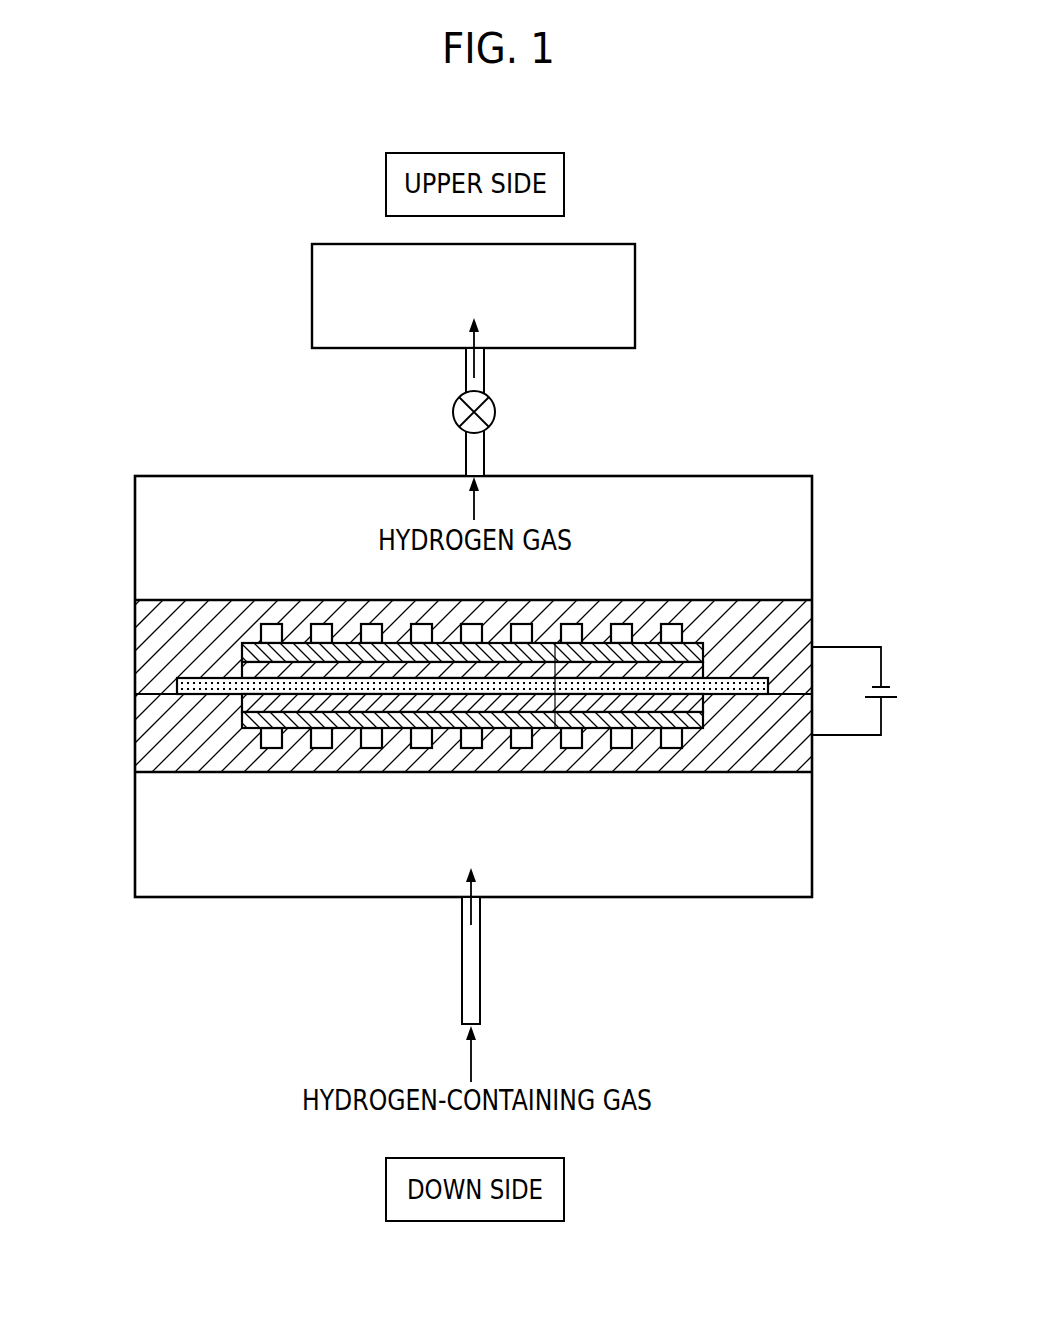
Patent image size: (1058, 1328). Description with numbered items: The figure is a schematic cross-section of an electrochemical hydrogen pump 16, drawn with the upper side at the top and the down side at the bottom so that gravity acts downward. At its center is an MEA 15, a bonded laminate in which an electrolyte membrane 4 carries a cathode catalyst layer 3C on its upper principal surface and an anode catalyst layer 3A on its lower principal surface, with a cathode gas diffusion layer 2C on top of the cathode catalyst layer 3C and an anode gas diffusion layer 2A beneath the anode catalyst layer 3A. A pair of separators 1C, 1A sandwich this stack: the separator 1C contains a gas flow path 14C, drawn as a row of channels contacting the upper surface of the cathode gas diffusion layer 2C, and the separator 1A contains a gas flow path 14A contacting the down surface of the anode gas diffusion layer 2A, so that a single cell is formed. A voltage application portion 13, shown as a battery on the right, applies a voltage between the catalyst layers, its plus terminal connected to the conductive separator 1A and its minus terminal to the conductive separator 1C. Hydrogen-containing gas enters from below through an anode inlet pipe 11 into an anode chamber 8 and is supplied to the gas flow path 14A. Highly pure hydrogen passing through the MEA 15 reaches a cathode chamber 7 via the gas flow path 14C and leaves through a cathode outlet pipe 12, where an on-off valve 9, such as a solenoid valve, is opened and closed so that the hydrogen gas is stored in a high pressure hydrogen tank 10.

The separator 1A is at (779, 748).
The separator 1C is at (779, 650).
The anode gas diffusion layer 2A is at (242, 722).
The cathode gas diffusion layer 2C is at (242, 655).
The anode catalyst layer 3A is at (242, 703).
The cathode catalyst layer 3C is at (242, 670).
The electrolyte membrane 4 is at (177, 690).
The cathode chamber 7 is at (318, 548).
The anode chamber 8 is at (317, 860).
The on-off valve 9 is at (452, 413).
The high pressure hydrogen tank 10 is at (490, 310).
The anode inlet pipe 11 is at (462, 947).
The cathode outlet pipe 12 is at (485, 457).
The voltage application portion 13 is at (890, 672).
The gas flow path 14A is at (685, 740).
The gas flow path 14C is at (686, 634).
The MEA 15 is at (555, 688).
The electrochemical hydrogen pump 16 is at (783, 433).